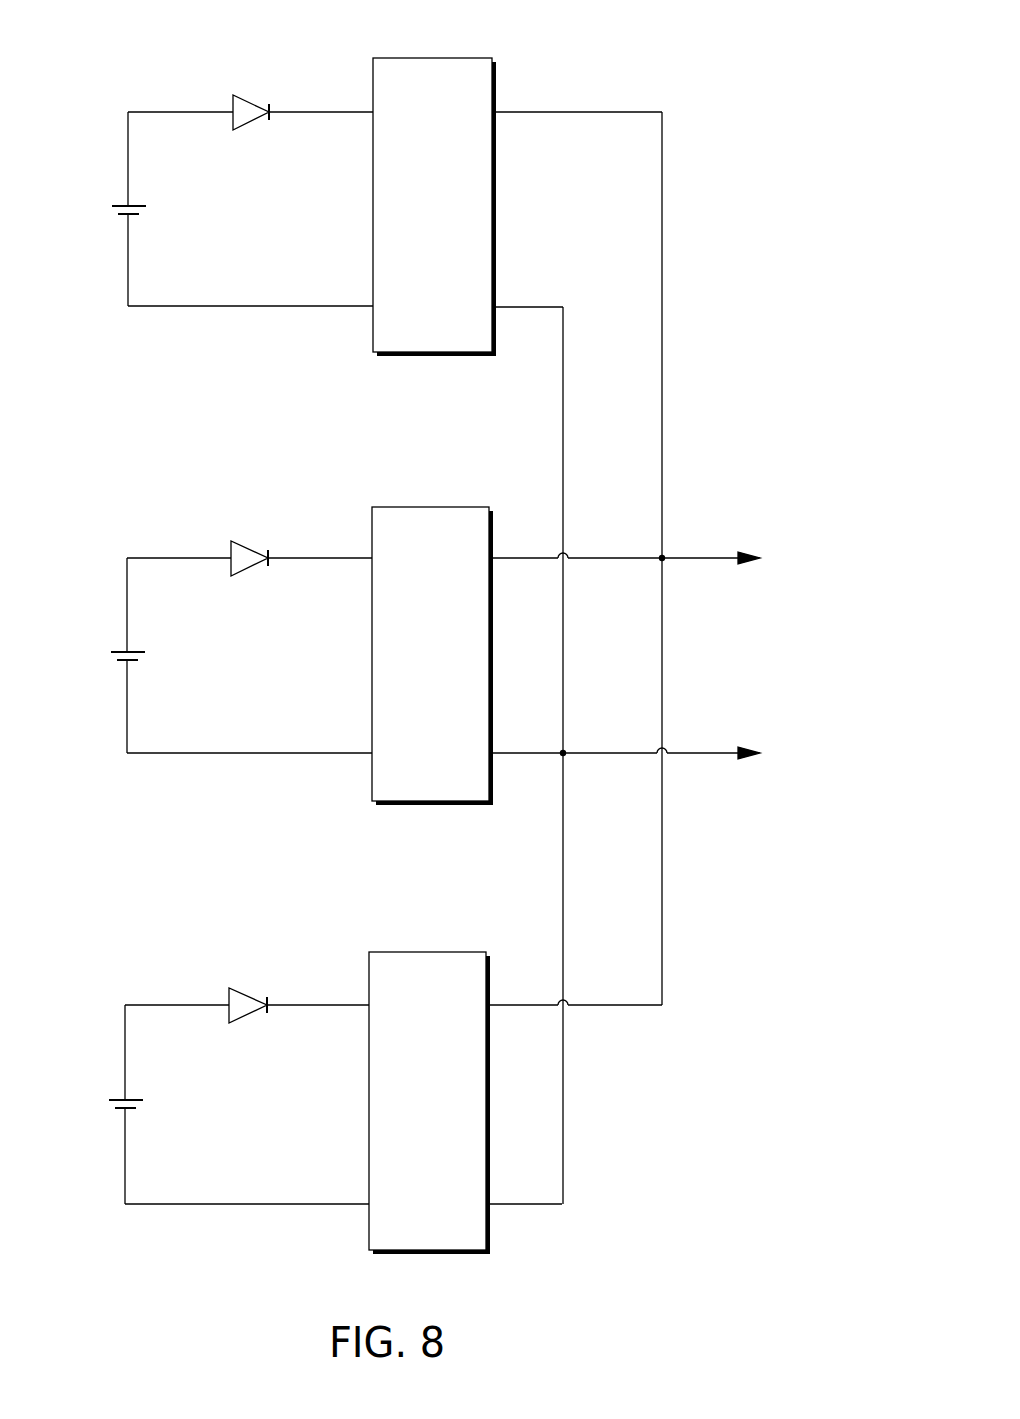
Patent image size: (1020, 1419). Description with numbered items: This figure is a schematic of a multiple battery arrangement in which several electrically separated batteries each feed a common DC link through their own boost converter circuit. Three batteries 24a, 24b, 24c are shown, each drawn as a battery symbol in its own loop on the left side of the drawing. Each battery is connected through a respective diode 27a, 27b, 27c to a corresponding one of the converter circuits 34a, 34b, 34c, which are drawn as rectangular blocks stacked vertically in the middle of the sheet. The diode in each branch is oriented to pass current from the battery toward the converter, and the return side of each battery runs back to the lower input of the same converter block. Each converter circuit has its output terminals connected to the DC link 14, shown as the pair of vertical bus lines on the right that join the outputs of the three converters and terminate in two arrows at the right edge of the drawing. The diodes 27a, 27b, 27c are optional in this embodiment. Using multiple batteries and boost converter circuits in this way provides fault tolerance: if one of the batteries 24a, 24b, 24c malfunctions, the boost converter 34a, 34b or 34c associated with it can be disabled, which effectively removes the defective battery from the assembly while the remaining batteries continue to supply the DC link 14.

The DC link 14 is at (706, 558).
The battery 24a is at (124, 207).
The battery 24b is at (123, 653).
The battery 24c is at (121, 1101).
The diode 27a is at (257, 108).
The diode 27b is at (256, 554).
The diode 27c is at (256, 1001).
The converter circuit 34a is at (445, 58).
The converter circuit 34b is at (444, 507).
The converter circuit 34c is at (440, 952).